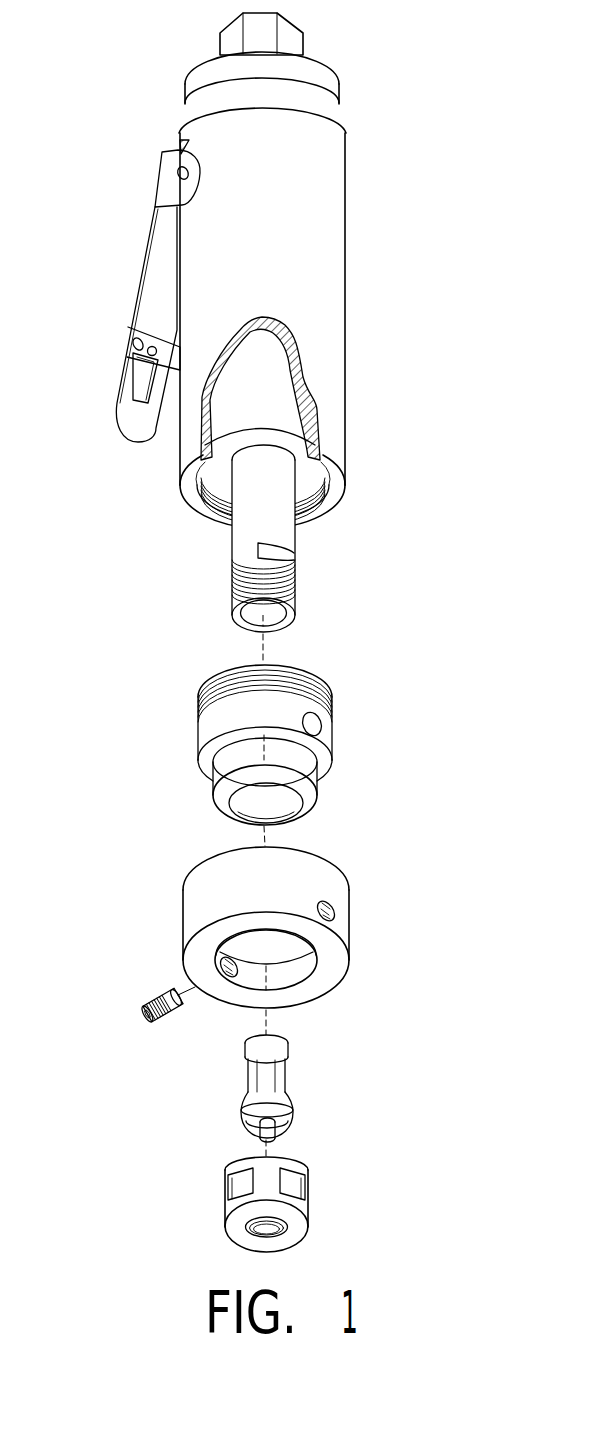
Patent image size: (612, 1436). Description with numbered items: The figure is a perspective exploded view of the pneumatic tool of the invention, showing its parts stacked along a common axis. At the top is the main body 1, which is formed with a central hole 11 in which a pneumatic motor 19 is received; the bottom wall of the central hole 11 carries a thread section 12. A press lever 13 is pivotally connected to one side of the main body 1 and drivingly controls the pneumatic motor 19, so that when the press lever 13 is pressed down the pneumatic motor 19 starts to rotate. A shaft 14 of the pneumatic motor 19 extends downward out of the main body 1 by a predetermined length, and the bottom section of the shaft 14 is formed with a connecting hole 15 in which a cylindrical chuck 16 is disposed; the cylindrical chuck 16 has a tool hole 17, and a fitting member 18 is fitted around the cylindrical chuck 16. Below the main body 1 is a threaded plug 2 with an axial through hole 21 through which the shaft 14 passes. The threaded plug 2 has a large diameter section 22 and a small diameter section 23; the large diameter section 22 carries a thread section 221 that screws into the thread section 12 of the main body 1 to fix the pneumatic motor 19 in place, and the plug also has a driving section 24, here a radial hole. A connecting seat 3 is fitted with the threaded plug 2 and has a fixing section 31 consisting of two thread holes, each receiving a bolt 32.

The main body 1 is at (333, 292).
The central hole 11 is at (305, 478).
The thread section 12 is at (217, 517).
The press lever 13 is at (162, 295).
The shaft 14 is at (285, 523).
The connecting hole 15 is at (288, 620).
The cylindrical chuck 16 is at (270, 1070).
The tool hole 17 is at (272, 1142).
The fitting member 18 is at (288, 1202).
The pneumatic motor 19 is at (270, 395).
The threaded plug 2 is at (191, 693).
The axial through hole 21 is at (283, 803).
The large diameter section 22 is at (217, 725).
The thread section 221 is at (313, 690).
The small diameter section 23 is at (230, 766).
The driving section 24 is at (320, 723).
The connecting seat 3 is at (320, 878).
The fixing section 31 is at (334, 903).
The bolt 32 is at (160, 993).